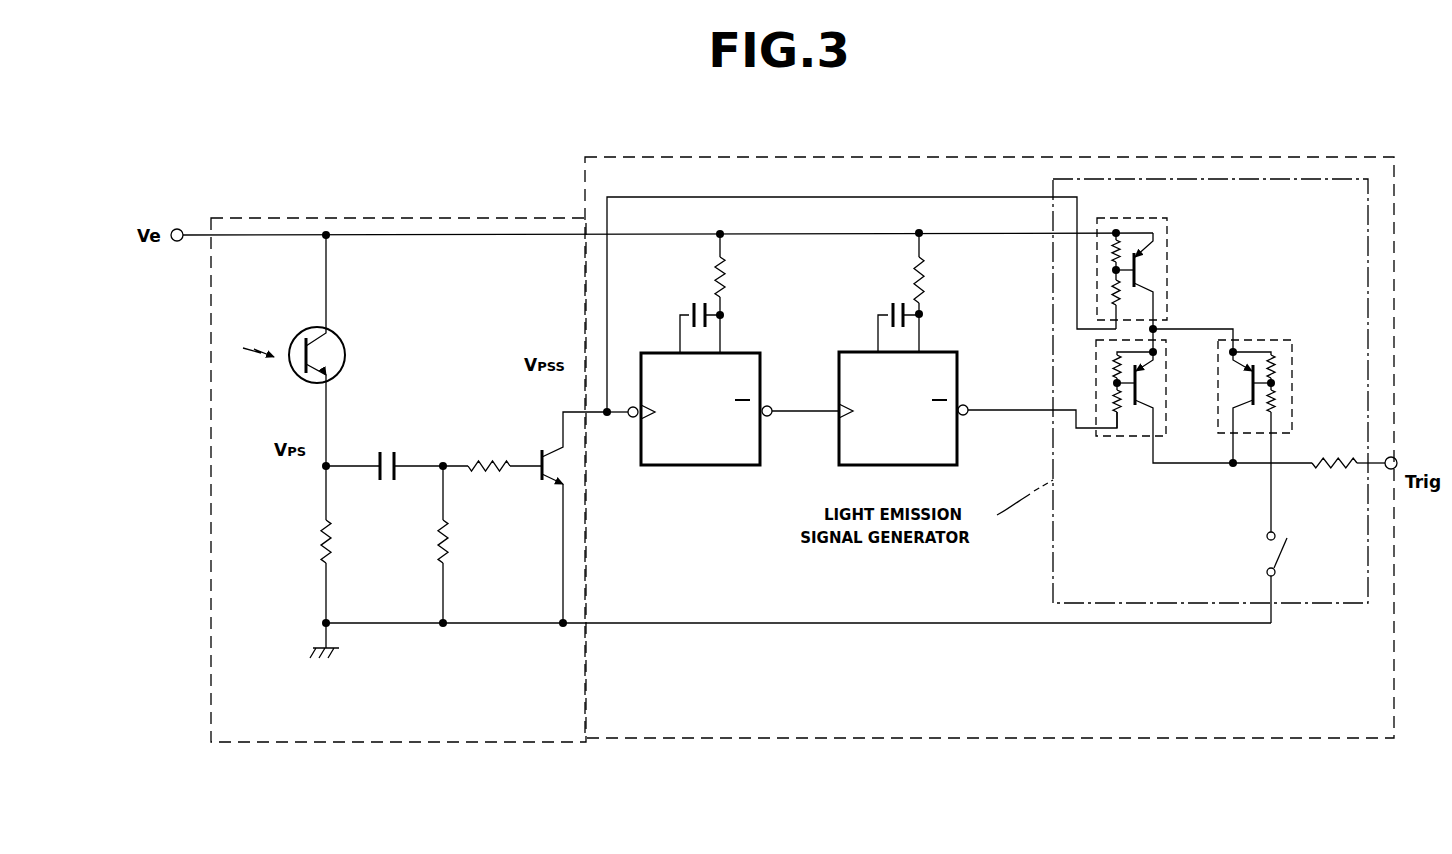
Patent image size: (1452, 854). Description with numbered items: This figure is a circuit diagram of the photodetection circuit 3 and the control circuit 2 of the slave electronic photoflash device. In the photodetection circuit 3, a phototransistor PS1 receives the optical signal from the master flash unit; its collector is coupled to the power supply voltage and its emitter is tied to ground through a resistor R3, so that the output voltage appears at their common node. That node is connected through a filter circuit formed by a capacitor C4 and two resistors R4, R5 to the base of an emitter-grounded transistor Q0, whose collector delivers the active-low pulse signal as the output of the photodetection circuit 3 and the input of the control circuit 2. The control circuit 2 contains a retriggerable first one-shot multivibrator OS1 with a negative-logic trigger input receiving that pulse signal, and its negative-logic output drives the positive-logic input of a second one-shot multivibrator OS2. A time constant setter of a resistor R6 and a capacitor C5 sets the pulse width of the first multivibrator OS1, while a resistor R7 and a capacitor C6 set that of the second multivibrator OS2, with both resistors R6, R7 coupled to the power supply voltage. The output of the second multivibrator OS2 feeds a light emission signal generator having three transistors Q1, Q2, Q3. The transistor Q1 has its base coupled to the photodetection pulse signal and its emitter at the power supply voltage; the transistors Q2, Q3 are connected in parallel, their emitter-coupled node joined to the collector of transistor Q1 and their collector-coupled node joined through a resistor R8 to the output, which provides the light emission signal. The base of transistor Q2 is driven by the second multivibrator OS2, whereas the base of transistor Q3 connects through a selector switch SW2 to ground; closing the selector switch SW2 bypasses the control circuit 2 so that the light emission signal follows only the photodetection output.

The control circuit 2 is at (1008, 738).
The photodetection circuit 3 is at (470, 742).
The phototransistor PS1 is at (313, 350).
The capacitor C4 is at (384, 454).
The resistor R3 is at (308, 544).
The resistor R4 is at (460, 544).
The resistor R5 is at (492, 449).
The emitter-grounded transistor Q0 is at (565, 517).
The first one-shot monostable multivibrator circuit OS1 is at (723, 409).
The second one-shot monostable multivibrator circuit OS2 is at (978, 408).
The capacitor C5 is at (700, 316).
The capacitor C6 is at (898, 316).
The resistor R6 is at (739, 293).
The resistor R7 is at (936, 292).
The transistor Q1 is at (1150, 272).
The transistor Q2 is at (1204, 401).
The transistor Q3 is at (1271, 436).
The resistor R8 is at (1348, 476).
The selector switch SW2 is at (1303, 577).